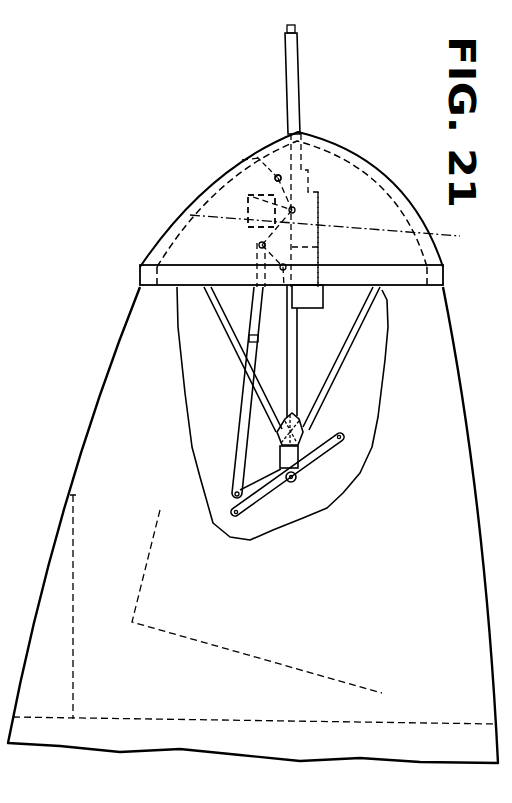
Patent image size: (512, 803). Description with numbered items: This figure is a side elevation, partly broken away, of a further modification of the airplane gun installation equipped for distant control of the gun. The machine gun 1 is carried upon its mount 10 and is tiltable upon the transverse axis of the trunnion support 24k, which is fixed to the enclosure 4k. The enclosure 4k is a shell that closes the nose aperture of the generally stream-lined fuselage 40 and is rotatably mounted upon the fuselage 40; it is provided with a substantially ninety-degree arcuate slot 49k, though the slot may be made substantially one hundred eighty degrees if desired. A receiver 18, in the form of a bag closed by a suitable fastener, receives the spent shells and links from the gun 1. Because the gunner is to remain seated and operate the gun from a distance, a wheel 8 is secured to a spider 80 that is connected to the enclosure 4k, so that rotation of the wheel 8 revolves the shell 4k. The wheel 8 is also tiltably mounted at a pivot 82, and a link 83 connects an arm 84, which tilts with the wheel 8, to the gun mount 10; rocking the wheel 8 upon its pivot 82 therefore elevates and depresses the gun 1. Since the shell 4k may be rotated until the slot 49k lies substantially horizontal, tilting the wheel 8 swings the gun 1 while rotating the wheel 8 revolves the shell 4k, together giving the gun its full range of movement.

The machine gun 1 is at (302, 62).
The enclosure 4k is at (240, 162).
The support 24k is at (258, 187).
The arcuate slot 49k is at (363, 146).
The mount 10 is at (327, 247).
The fuselage 40 is at (450, 377).
The spider 80 is at (345, 338).
The link 83 is at (242, 409).
The arm 84 is at (262, 479).
The wheel 8 is at (343, 441).
The pivot 82 is at (297, 479).
The receiver 18 is at (147, 568).